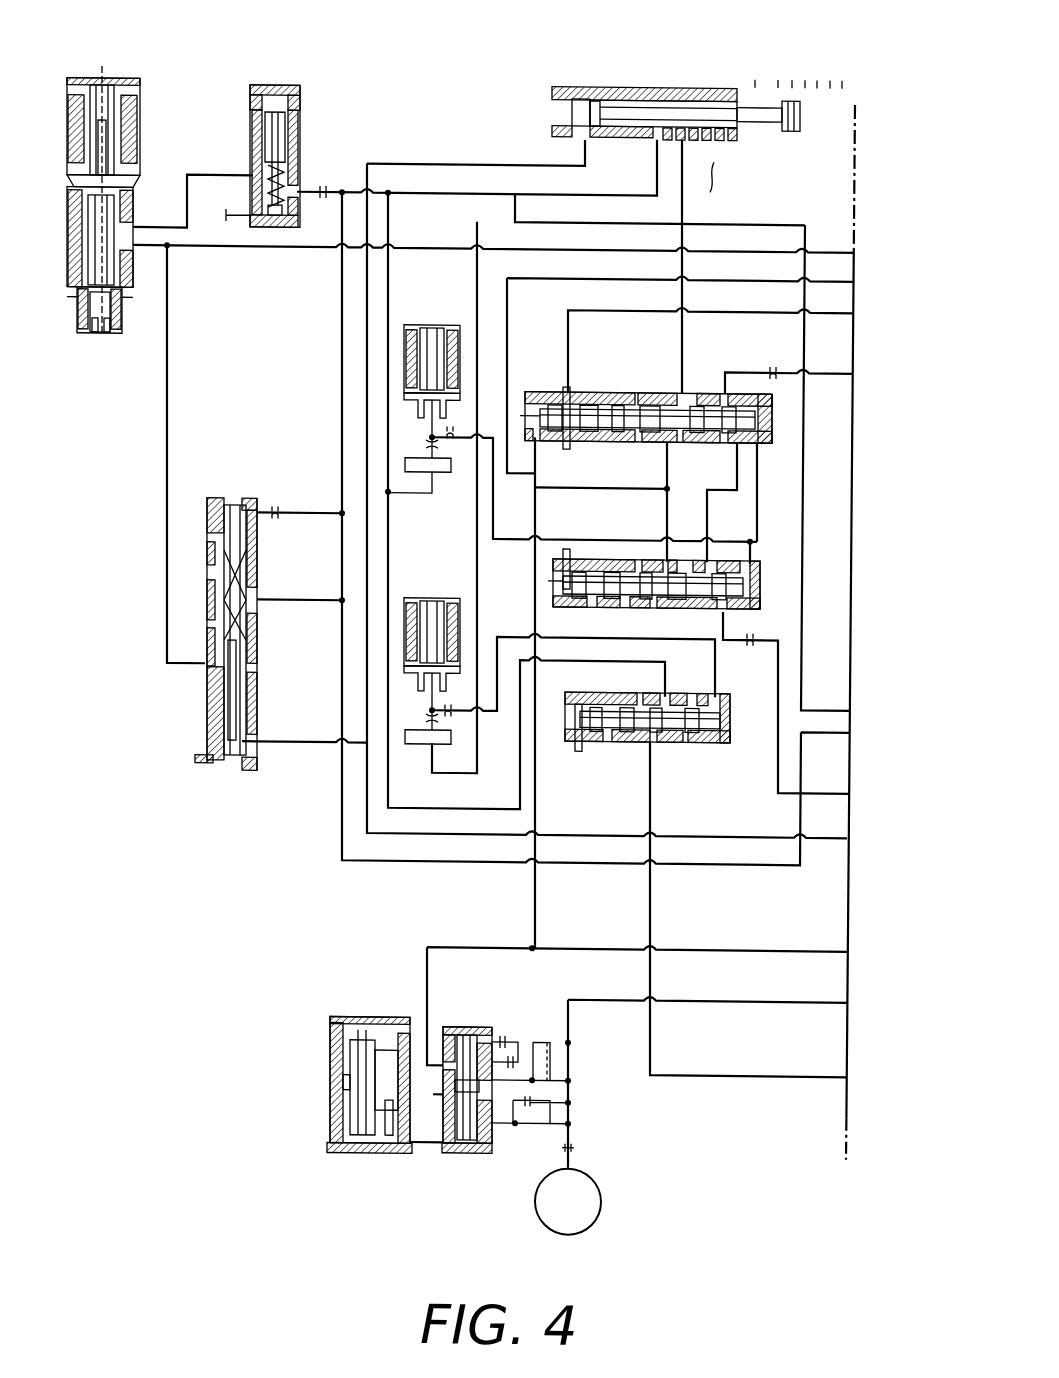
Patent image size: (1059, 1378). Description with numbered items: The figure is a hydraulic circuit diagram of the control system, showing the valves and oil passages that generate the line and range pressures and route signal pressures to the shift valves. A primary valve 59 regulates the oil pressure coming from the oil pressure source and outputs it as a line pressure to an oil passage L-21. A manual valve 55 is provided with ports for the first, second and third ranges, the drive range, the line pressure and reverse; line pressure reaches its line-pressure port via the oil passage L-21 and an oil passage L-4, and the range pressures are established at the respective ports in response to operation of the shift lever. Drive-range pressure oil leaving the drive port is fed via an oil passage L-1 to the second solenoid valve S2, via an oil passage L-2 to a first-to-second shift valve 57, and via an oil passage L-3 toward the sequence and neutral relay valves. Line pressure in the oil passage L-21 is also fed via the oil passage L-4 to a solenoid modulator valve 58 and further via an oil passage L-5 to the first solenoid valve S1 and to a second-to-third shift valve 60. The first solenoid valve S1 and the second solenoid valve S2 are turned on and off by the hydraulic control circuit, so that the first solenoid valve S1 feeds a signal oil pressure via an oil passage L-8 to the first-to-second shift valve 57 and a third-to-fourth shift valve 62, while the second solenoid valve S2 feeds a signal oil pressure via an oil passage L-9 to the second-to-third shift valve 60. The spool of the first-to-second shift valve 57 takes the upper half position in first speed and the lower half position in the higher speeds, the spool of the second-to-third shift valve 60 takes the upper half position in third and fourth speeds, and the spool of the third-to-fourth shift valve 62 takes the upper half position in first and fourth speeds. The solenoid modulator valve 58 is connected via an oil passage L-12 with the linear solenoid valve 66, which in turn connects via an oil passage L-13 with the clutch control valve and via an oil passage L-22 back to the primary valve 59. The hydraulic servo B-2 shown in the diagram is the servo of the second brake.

The linear solenoid valve 66 is at (130, 82).
The solenoid modulator valve 58 is at (297, 88).
The manual valve 55 is at (648, 88).
The 1-2 shift valve 57 is at (540, 392).
The primary valve 59 is at (252, 503).
The 3-4 shift valve 62 is at (762, 572).
The 2-3 shift valve 60 is at (727, 699).
The first solenoid valve S1 is at (422, 393).
The second solenoid valve S2 is at (432, 654).
The hydraulic servo of the second brake B-2 is at (568, 1201).
The oil passage L-1 is at (515, 194).
The oil passage L-2 is at (682, 344).
The oil passage L-3 is at (778, 222).
The oil passage L-4 is at (427, 194).
The oil passage L-5 is at (388, 324).
The oil passage L-8 is at (493, 502).
The oil passage L-9 is at (492, 716).
The oil passage L-12 is at (207, 178).
The oil passage L-13 is at (148, 257).
The oil passage L-21 is at (343, 397).
The oil passage L-22 is at (167, 470).